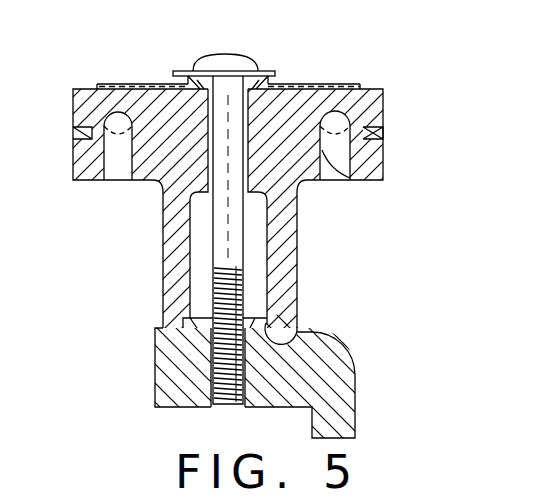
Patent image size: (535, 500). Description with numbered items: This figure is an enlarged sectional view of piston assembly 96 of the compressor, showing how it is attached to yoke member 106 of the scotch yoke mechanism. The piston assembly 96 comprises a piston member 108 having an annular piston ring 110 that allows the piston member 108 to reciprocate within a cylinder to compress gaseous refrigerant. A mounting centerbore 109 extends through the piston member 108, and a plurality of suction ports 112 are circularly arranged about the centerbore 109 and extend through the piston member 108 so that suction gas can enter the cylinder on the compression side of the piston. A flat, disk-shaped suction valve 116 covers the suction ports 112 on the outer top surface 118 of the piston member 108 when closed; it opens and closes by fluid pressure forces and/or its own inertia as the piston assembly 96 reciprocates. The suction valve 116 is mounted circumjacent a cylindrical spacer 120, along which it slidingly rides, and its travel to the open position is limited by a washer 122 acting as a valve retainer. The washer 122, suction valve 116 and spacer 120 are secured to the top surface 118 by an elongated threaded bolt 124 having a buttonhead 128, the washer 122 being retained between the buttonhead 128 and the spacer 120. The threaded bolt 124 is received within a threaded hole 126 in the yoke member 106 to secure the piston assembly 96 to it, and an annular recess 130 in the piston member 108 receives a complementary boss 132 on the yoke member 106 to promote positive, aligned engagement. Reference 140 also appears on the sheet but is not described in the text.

The piston assembly 96 is at (137, 292).
The yoke member 106 is at (337, 388).
The piston member 108 is at (146, 186).
The mounting centerbore 109 is at (215, 128).
The annular piston ring 110 is at (382, 131).
The suction ports 112 is at (336, 152).
The suction valve 116 is at (333, 88).
The outer top surface 118 is at (82, 88).
The cylindrical spacer 120 is at (277, 82).
The washer 122 is at (262, 72).
The elongated threaded bolt 124 is at (235, 248).
The threaded hole 126 is at (222, 358).
The buttonhead 128 is at (222, 56).
The annular recess 130 is at (278, 346).
The boss 132 is at (258, 318).
The lead 140 is at (13, 499).